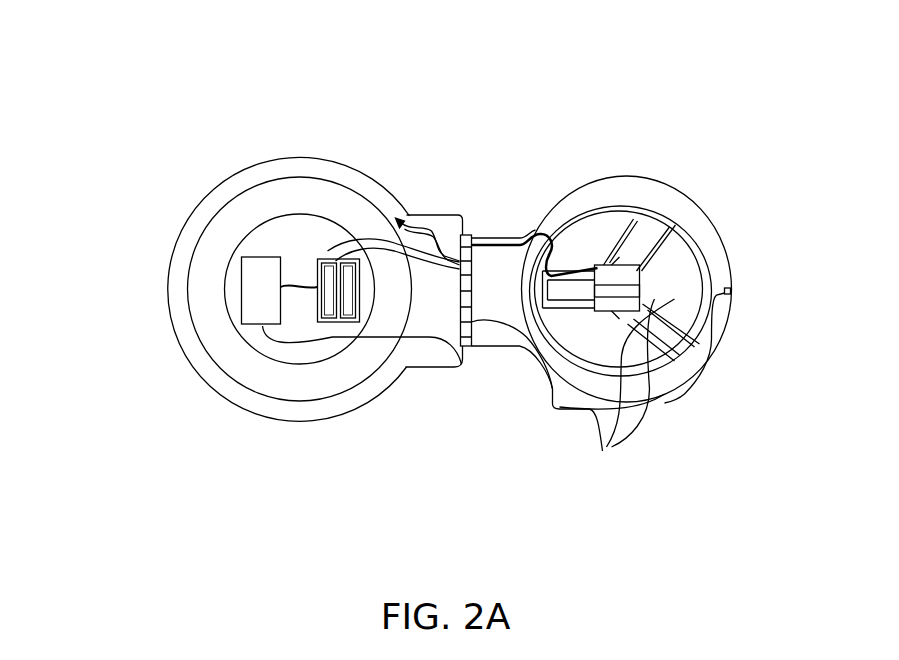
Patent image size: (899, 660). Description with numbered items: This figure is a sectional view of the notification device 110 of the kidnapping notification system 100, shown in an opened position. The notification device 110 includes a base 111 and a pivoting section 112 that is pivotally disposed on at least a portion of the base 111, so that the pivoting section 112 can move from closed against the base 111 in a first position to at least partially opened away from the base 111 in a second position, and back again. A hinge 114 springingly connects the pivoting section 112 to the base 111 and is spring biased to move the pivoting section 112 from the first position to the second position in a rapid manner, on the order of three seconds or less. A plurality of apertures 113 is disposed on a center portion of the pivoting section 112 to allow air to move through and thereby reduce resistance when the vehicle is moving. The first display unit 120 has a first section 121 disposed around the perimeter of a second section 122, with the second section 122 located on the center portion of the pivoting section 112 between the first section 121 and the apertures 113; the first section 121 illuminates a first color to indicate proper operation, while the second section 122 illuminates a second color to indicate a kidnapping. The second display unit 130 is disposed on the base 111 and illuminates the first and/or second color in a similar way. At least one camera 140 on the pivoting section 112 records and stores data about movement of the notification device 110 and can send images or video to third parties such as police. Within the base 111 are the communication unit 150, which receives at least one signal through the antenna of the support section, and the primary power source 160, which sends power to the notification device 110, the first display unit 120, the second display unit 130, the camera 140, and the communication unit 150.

The kidnapping notification system 100 is at (213, 85).
The notification device 110 is at (491, 392).
The base 111 is at (288, 390).
The pivoting section 112 is at (590, 188).
The plurality of apertures 113 is at (577, 255).
The hinge 114 is at (464, 234).
The first display unit 120 is at (740, 226).
The first section 121 is at (665, 395).
The second section 122 is at (620, 262).
The second display unit 130 is at (205, 212).
The at least one camera 140 is at (732, 292).
The communication unit 150 is at (257, 303).
The primary power source 160 is at (345, 313).